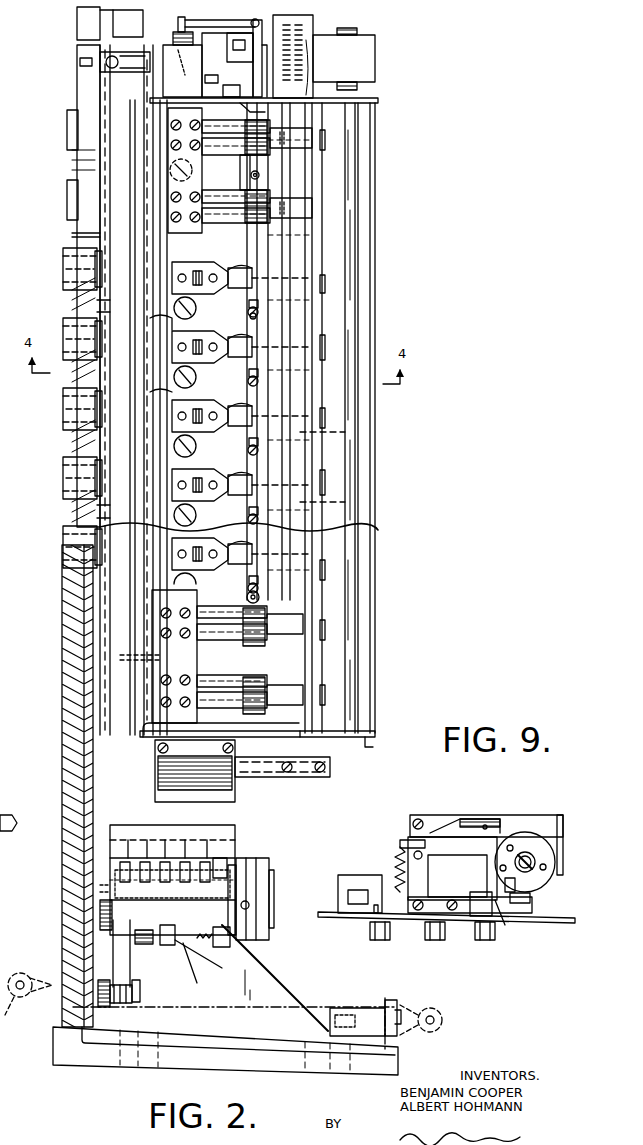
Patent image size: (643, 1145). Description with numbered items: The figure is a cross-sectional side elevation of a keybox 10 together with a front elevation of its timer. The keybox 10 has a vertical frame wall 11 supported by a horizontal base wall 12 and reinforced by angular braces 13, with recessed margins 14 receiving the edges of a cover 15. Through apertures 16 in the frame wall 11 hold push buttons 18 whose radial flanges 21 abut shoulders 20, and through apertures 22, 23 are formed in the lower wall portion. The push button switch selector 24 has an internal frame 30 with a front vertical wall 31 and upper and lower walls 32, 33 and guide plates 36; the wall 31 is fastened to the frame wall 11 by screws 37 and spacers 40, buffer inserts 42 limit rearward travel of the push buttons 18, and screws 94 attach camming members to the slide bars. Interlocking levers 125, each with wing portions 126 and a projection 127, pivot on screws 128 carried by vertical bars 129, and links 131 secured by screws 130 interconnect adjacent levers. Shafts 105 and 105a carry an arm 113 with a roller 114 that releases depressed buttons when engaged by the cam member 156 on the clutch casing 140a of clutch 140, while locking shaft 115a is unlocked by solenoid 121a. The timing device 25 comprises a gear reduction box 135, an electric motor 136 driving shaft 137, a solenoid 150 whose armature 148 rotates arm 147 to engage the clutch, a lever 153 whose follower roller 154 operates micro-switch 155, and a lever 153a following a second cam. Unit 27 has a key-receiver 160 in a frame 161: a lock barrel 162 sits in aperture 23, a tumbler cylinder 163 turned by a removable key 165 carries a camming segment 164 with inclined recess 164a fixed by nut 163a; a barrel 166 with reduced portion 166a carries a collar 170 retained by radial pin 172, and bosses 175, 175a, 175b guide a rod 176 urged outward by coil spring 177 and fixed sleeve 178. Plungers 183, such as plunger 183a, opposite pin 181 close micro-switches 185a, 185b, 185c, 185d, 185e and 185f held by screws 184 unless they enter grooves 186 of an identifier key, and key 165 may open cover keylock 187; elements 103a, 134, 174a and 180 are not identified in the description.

In FIG. 2, the keybox 10 is at (52, 533).
In FIG. 2, the vertical frame wall 11 is at (62, 733).
In FIG. 2, the horizontal base wall 12 is at (398, 1060).
In FIG. 2, the angular braces 13 is at (272, 990).
In FIG. 2, the recessed margins 14 is at (268, 1052).
In FIG. 2, the cover 15 is at (326, 1010).
In FIG. 2, the through apertures 16 is at (93, 433).
In FIG. 2, the push buttons 18 is at (63, 200).
In FIG. 2, the shoulder 20 is at (96, 378).
In FIG. 2, the radial flanges 21 is at (96, 311).
In FIG. 2, the through aperture 22 is at (62, 905).
In FIG. 2, the through aperture 23 is at (58, 1002).
In FIG. 2, the push button switch selector 24 is at (390, 311).
In FIG. 2, the timing device 25 is at (371, 33).
In FIG. 9, the timing device 25 is at (569, 812).
In FIG. 2, the key-operated identifier and push-button lock 27 is at (289, 857).
In FIG. 2, the internal frame 30 is at (378, 100).
In FIG. 2, the front vertical wall 31 is at (145, 97).
In FIG. 2, the upper wall 32 is at (358, 107).
In FIG. 2, the lower wall 33 is at (368, 738).
In FIG. 2, the guide plates 36 is at (312, 736).
In FIG. 2, the screws 37 is at (80, 61).
In FIG. 2, the spacers 40 is at (112, 68).
In FIG. 2, the buffer inserts 42 is at (130, 655).
In FIG. 2, the screws 94 is at (172, 272).
In FIG. 2, the link 103a is at (245, 103).
In FIG. 9, the shaft 105 is at (436, 940).
In FIG. 9, the shaft 105a is at (486, 942).
In FIG. 2, the arm 113 is at (223, 91).
In FIG. 9, the arm 113 is at (505, 925).
In FIG. 2, the roller 114 is at (212, 75).
In FIG. 9, the roller 114 is at (516, 890).
In FIG. 9, the locking shaft 115a is at (390, 935).
In FIG. 9, the solenoid 121a is at (368, 869).
In FIG. 2, the levers 125 is at (227, 520).
In FIG. 2, the wing portions 126 is at (228, 246).
In FIG. 2, the projection 127 is at (259, 317).
In FIG. 2, the screws 128 is at (178, 320).
In FIG. 2, the vertical bars 129 is at (172, 393).
In FIG. 2, the screws 130 is at (258, 594).
In FIG. 2, the link 131 is at (280, 250).
In FIG. 2, the connecting rod 134 is at (322, 472).
In FIG. 2, the gear reduction box 135 is at (347, 29).
In FIG. 9, the gear reduction box 135 is at (447, 815).
In FIG. 2, the electric motor 136 is at (366, 60).
In FIG. 2, the shaft 137 is at (257, 80).
In FIG. 2, the clutch 140 is at (233, 50).
In FIG. 2, the clutch casing 140a is at (252, 52).
In FIG. 9, the clutch casing 140a is at (540, 851).
In FIG. 2, the arm 147 is at (223, 20).
In FIG. 2, the armature 148 is at (178, 20).
In FIG. 9, the armature 148 is at (408, 845).
In FIG. 2, the solenoid 150 is at (194, 92).
In FIG. 9, the solenoid 150 is at (468, 886).
In FIG. 9, the lever 153 is at (476, 820).
In FIG. 9, the lever 153a is at (532, 905).
In FIG. 9, the follower roller 154 is at (522, 832).
In FIG. 9, the micro-switch 155 is at (428, 824).
In FIG. 9, the cam member 156 is at (512, 905).
In FIG. 2, the key-receiver 160 is at (140, 982).
In FIG. 2, the frame 161 is at (99, 1007).
In FIG. 2, the lock barrel 162 is at (132, 1004).
In FIG. 2, the tumbler lock cylinder 163 is at (141, 985).
In FIG. 2, the nut 163a is at (140, 993).
In FIG. 2, the camming segment 164 is at (132, 963).
In FIG. 2, the inclined recess 164a is at (168, 896).
In FIG. 2, the removable key 165 is at (443, 1020).
In FIG. 2, the cylindrical barrel 166 is at (268, 933).
In FIG. 2, the reduced diametrical portion 166a is at (240, 876).
In FIG. 2, the collar 170 is at (272, 885).
In FIG. 2, the radial pin 172 is at (250, 905).
In FIG. 2, the nut 174a is at (173, 38).
In FIG. 2, the raised boss 175 is at (240, 948).
In FIG. 2, the raised boss 175a is at (152, 945).
In FIG. 2, the raised boss 175b is at (115, 932).
In FIG. 2, the rod 176 is at (172, 905).
In FIG. 2, the coil spring 177 is at (212, 960).
In FIG. 2, the fixed sleeve 178 is at (197, 983).
In FIG. 2, the nut 180 is at (218, 908).
In FIG. 2, the pin 181 is at (138, 893).
In FIG. 2, the plungers 183 is at (165, 864).
In FIG. 2, the plunger 183a is at (216, 885).
In FIG. 2, the screws 184 is at (237, 843).
In FIG. 2, the micro-switch 185a is at (236, 839).
In FIG. 2, the micro-switch 185b is at (222, 841).
In FIG. 2, the micro-switch 185c is at (190, 841).
In FIG. 2, the micro-switch 185d is at (157, 841).
In FIG. 2, the micro-switch 185e is at (120, 846).
In FIG. 2, the micro-switch 185f is at (155, 795).
In FIG. 2, the transverse grooves 186 is at (56, 885).
In FIG. 2, the cover keylock 187 is at (404, 1004).